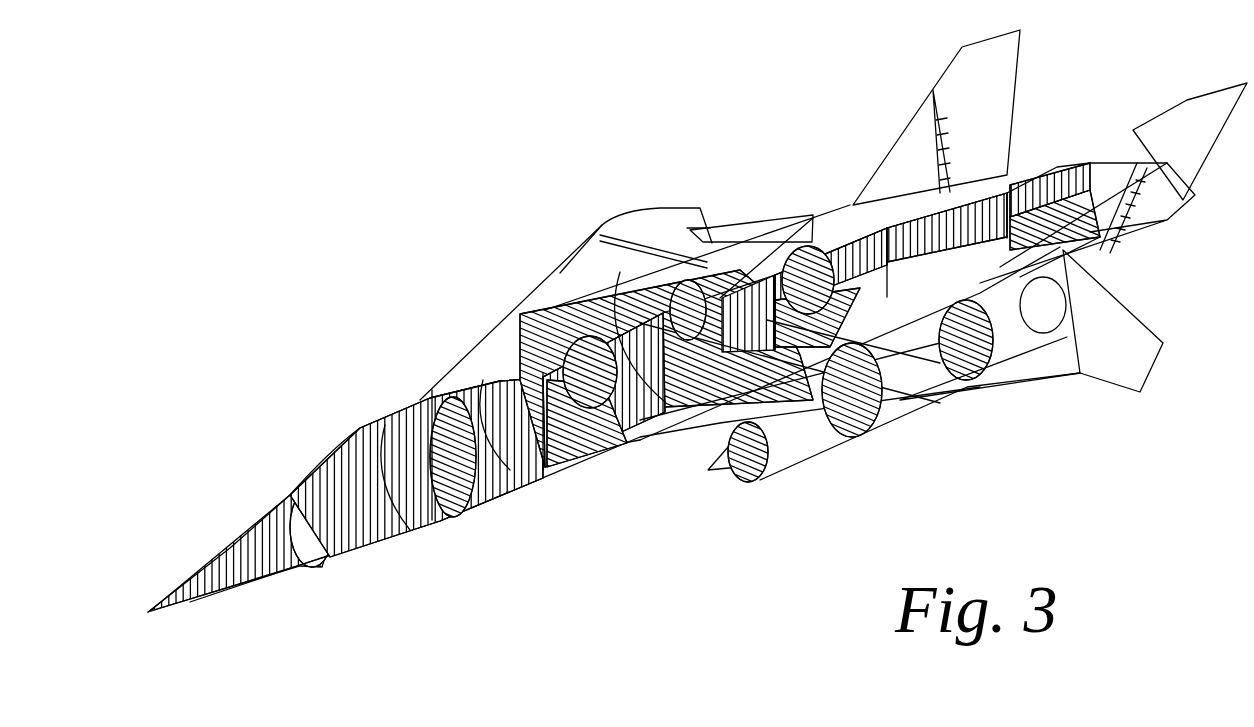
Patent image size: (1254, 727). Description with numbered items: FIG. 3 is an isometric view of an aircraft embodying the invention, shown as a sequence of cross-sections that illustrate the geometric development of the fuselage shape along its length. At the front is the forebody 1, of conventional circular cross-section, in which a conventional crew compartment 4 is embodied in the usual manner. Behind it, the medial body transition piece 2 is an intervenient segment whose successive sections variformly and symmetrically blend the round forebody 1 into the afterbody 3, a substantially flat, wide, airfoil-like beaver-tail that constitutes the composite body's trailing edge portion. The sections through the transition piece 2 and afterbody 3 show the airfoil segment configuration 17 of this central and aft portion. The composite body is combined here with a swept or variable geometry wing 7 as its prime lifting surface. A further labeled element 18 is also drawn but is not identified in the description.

The forebody 1 is at (276, 468).
The medial body transition piece 2 is at (767, 207).
The afterbody 3 is at (1055, 160).
The crew compartment 4 is at (352, 460).
The swept or variable geometry wing 7 is at (664, 237).
The airfoil segment configuration 17 is at (572, 348).
The frame 18 is at (662, 414).